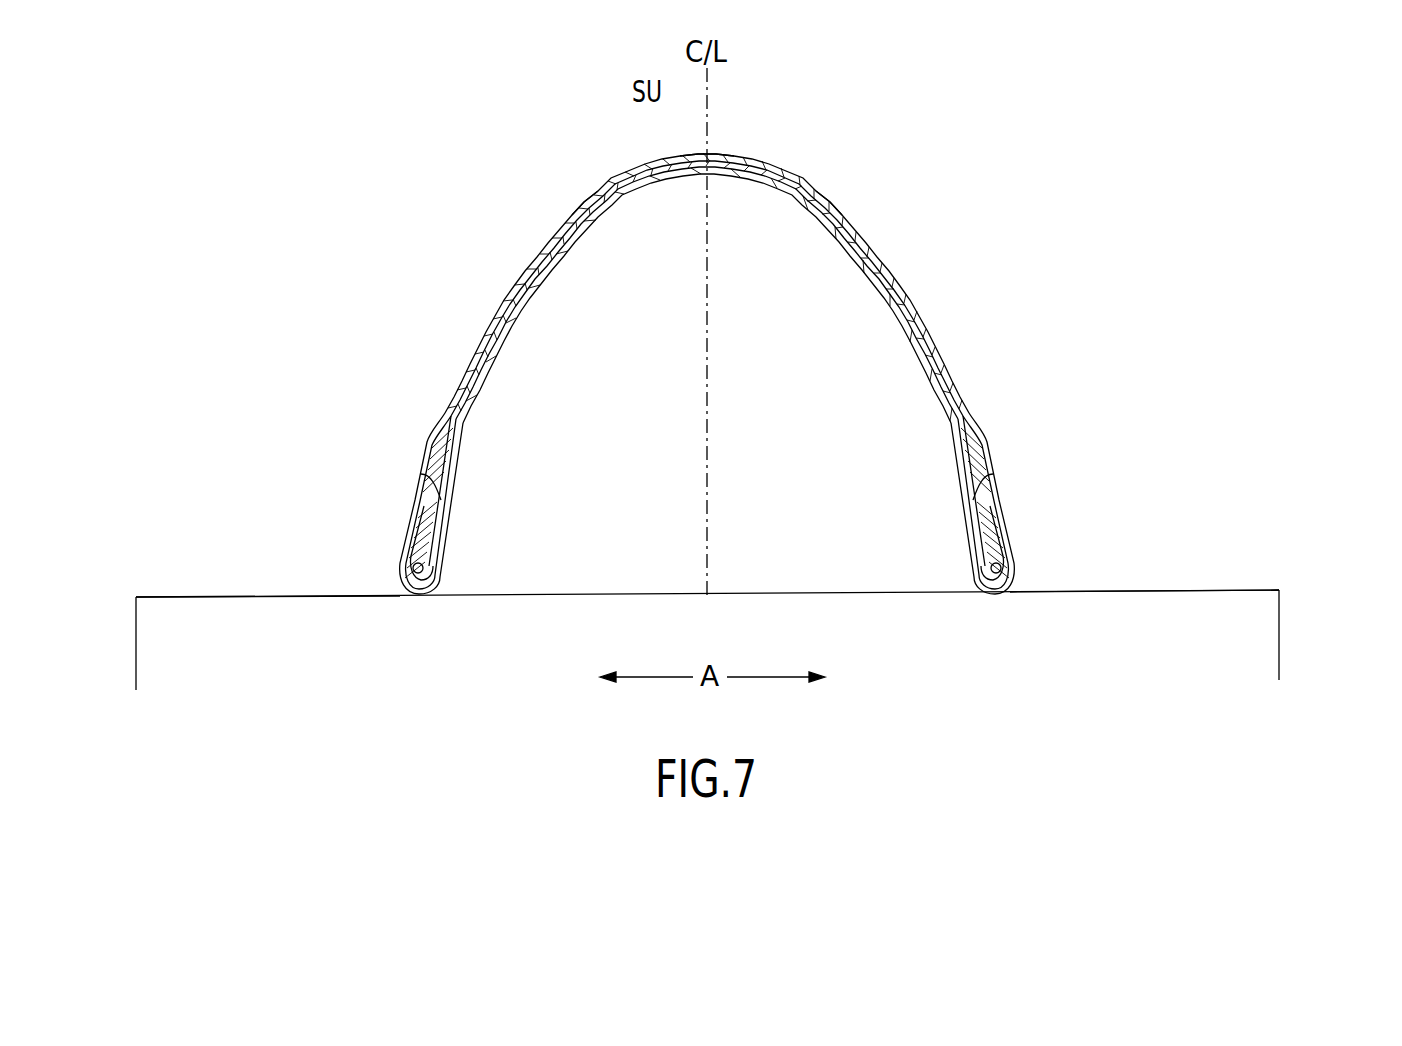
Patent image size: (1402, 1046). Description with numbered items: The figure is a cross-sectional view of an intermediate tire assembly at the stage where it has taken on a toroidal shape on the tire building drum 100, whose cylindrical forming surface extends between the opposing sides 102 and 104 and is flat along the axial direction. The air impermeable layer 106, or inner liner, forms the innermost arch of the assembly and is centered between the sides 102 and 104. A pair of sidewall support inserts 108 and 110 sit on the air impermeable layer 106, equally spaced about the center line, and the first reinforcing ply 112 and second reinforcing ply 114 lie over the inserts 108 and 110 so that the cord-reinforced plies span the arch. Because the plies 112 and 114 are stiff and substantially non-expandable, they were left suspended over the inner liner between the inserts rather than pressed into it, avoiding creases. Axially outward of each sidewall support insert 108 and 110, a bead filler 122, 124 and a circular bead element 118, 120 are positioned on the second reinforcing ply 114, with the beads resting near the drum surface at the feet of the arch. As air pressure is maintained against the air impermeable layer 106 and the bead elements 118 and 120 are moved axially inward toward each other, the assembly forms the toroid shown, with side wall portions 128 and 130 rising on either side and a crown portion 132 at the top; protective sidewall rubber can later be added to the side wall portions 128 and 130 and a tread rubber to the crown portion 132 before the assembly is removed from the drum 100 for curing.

The tire building drum 100 is at (1250, 622).
The side 102 is at (135, 526).
The side 104 is at (1277, 530).
The air impermeable layer 106 is at (648, 190).
The sidewall support insert 108 is at (455, 462).
The sidewall support insert 110 is at (967, 458).
The first reinforcing ply 112 is at (590, 206).
The second reinforcing ply 114 is at (824, 197).
The bead element 118 is at (416, 570).
The bead element 120 is at (998, 570).
The bead filler 122 is at (420, 522).
The bead filler 124 is at (995, 518).
The side wall portion 128 is at (431, 331).
The side wall portion 130 is at (995, 323).
The crown portion 132 is at (722, 140).